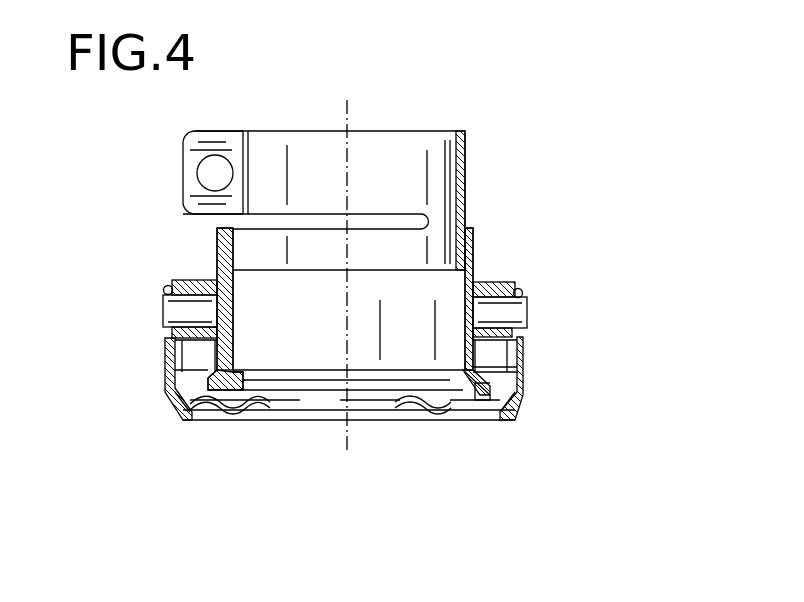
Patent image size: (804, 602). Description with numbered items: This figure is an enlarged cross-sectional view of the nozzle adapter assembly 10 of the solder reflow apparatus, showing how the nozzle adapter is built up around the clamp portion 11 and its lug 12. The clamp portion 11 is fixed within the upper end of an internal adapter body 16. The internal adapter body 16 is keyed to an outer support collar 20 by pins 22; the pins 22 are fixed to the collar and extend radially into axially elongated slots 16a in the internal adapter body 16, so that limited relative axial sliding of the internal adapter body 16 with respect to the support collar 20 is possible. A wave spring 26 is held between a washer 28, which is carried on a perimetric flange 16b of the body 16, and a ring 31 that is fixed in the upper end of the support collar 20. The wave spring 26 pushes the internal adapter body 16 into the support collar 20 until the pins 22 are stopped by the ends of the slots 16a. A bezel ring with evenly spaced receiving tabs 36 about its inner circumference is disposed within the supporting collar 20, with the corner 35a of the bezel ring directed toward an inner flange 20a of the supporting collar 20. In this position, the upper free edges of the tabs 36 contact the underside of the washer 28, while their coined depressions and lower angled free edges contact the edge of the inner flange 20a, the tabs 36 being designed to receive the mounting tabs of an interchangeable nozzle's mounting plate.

The electrical connector / socket assembly 10 is at (437, 87).
The clamp portion 11 is at (465, 129).
The mounting lug 12 is at (288, 130).
The internal adapter body 16 is at (475, 229).
The axially elongated slots 16a is at (233, 331).
The perimetric flange 16b is at (480, 400).
The outer support collar 20 is at (163, 357).
The inner flange 20a is at (180, 410).
The pins 22 is at (170, 317).
The wave spring 26 is at (500, 356).
The washer 28 is at (518, 404).
The ring 31 is at (195, 279).
The corner of the bezel ring 35a is at (207, 404).
The receiving tabs 36 is at (232, 407).